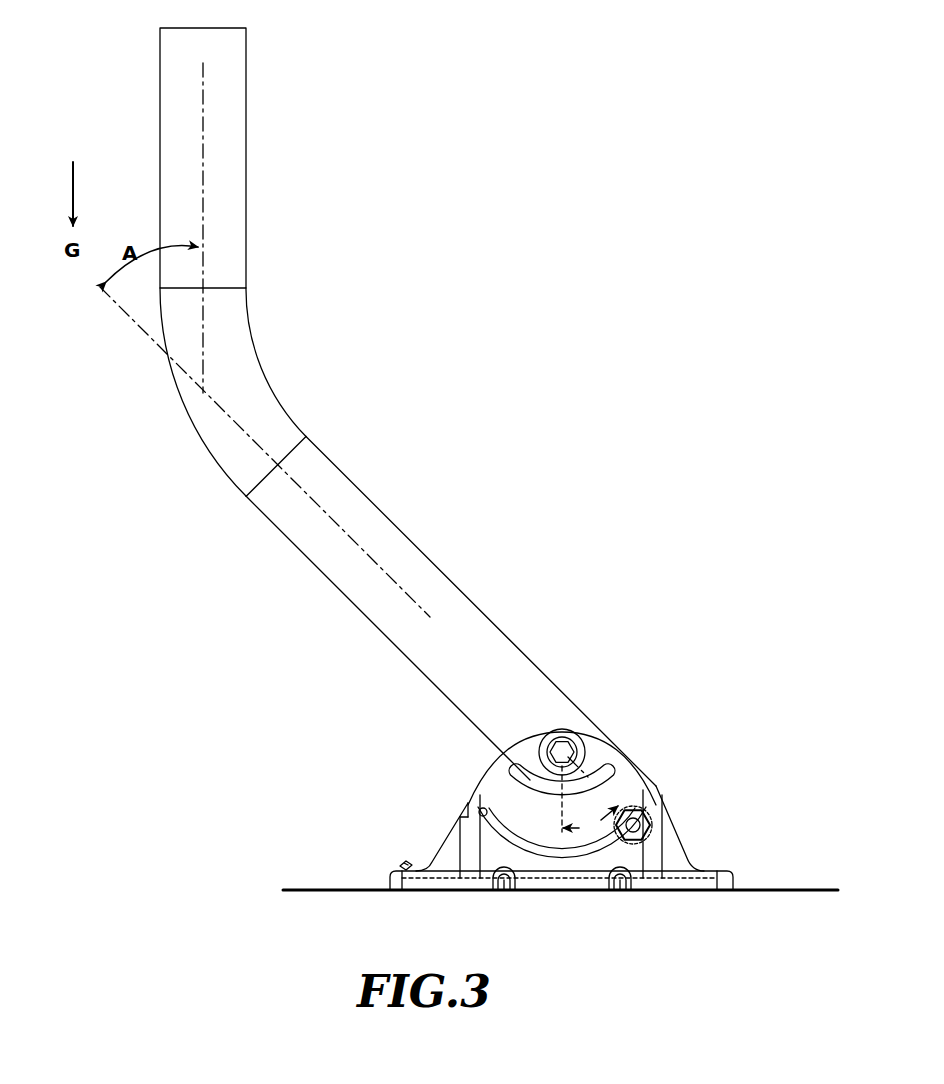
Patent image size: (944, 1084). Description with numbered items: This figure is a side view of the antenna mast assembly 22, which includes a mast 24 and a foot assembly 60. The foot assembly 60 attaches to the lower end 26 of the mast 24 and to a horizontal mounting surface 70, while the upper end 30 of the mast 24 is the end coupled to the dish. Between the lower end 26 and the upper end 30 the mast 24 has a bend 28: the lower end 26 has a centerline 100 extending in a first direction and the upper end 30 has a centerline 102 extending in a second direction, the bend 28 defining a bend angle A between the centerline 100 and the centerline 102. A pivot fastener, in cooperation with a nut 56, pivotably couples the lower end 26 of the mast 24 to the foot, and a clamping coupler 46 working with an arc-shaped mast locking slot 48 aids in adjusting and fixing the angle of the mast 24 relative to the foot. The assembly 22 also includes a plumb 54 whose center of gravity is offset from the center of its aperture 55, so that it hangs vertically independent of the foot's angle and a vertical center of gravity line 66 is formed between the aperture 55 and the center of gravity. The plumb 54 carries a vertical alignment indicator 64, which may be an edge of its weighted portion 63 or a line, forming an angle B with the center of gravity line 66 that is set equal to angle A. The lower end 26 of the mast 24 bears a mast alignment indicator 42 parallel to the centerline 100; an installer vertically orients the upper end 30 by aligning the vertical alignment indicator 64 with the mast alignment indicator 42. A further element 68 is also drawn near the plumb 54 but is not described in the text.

The seat support assembly 22 is at (676, 270).
The tubular member 24 is at (362, 437).
The inclined portion 26 is at (460, 603).
The bend portion 28 is at (245, 368).
The vertical portion 30 is at (230, 222).
The bracket 42 is at (597, 782).
The locking fastener 46 is at (655, 818).
The base plate 48 is at (552, 860).
The clamp ring 54 is at (586, 738).
The pivot bolt 55 is at (553, 740).
The spring band 56 is at (545, 818).
The mounting assembly 60 is at (742, 748).
The pivot washer 63 is at (541, 772).
The arcuate slot 64 is at (548, 790).
The hub 66 is at (560, 776).
The bolt head 68 is at (563, 737).
The floor surface 70 is at (790, 890).
The longitudinal axis 100 is at (353, 543).
The vertical axis 102 is at (205, 103).